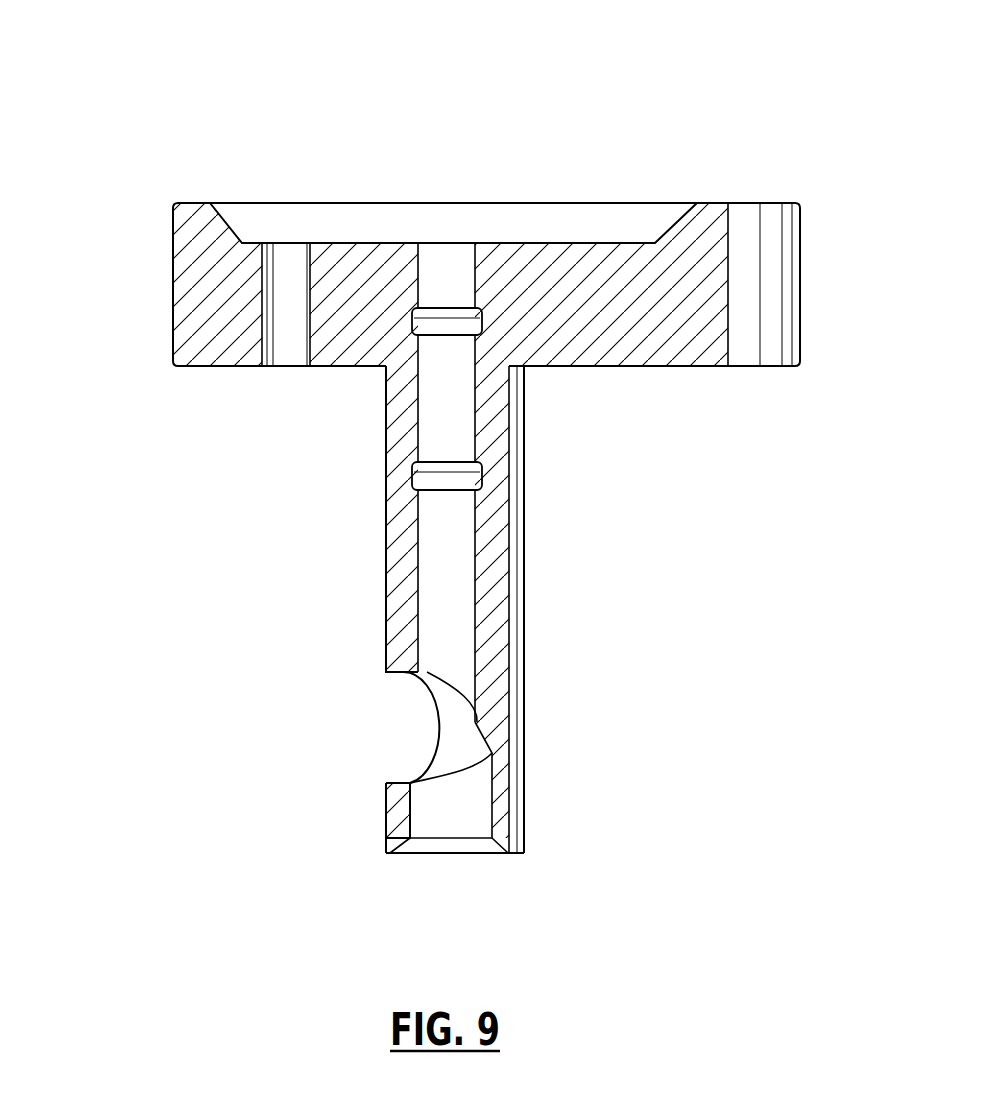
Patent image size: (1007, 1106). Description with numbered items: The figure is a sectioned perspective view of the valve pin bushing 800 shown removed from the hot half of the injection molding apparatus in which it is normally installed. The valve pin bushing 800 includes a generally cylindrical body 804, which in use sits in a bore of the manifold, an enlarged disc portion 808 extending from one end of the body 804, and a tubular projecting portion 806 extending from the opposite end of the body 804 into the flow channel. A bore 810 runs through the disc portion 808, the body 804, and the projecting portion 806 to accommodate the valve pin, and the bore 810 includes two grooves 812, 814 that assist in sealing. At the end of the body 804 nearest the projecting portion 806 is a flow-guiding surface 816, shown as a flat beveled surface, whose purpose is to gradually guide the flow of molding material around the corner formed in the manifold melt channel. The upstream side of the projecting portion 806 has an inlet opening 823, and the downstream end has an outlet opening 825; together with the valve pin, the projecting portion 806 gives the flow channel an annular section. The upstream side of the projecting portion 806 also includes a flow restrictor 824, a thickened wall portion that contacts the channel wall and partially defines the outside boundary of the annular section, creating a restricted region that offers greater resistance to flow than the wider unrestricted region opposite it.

The valve pin bushing 800 is at (775, 154).
The enlarged disc portion 808 is at (183, 272).
The body 804 is at (395, 512).
The projecting portion 806 is at (515, 786).
The bore 810 is at (478, 556).
The groove 812 is at (478, 323).
The groove 814 is at (480, 474).
The flow-guiding surface 816 is at (490, 737).
The inlet opening 823 is at (391, 727).
The flow restrictor 824 is at (398, 803).
The outlet opening 825 is at (449, 868).